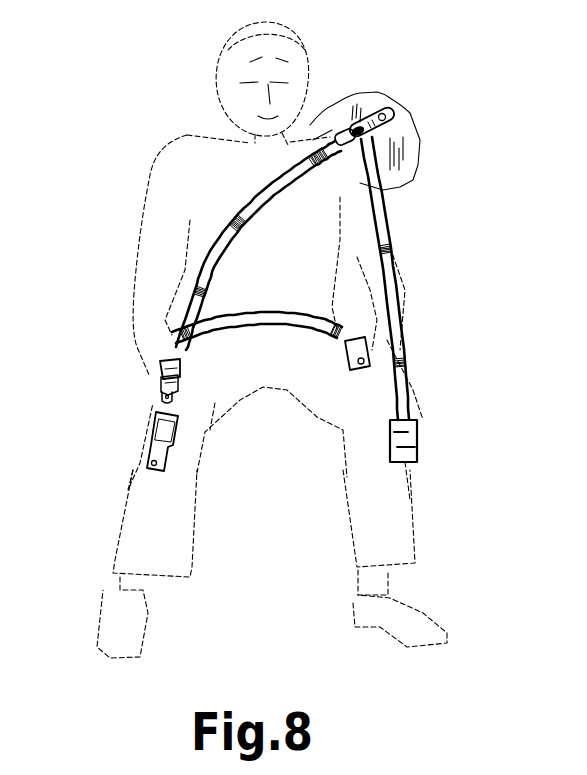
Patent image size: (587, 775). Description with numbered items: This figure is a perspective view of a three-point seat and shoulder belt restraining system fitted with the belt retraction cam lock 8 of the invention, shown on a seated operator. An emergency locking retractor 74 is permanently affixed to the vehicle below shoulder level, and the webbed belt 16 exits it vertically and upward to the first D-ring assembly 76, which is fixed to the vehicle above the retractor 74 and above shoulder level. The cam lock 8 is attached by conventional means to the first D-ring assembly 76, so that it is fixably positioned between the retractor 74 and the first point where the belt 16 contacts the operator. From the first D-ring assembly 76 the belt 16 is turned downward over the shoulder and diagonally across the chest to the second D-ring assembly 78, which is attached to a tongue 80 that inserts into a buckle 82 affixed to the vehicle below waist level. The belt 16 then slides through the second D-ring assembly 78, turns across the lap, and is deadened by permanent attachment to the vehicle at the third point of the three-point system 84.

The belt retraction cam lock 8 is at (332, 130).
The webbed belt 16 is at (393, 283).
The emergency locking retractor 74 is at (418, 452).
The first D-ring assembly 76 is at (398, 114).
The second D-ring assembly 78 is at (159, 363).
The tongue 80 is at (158, 394).
The buckle 82 is at (144, 435).
The third point of the three-point system 84 is at (345, 364).